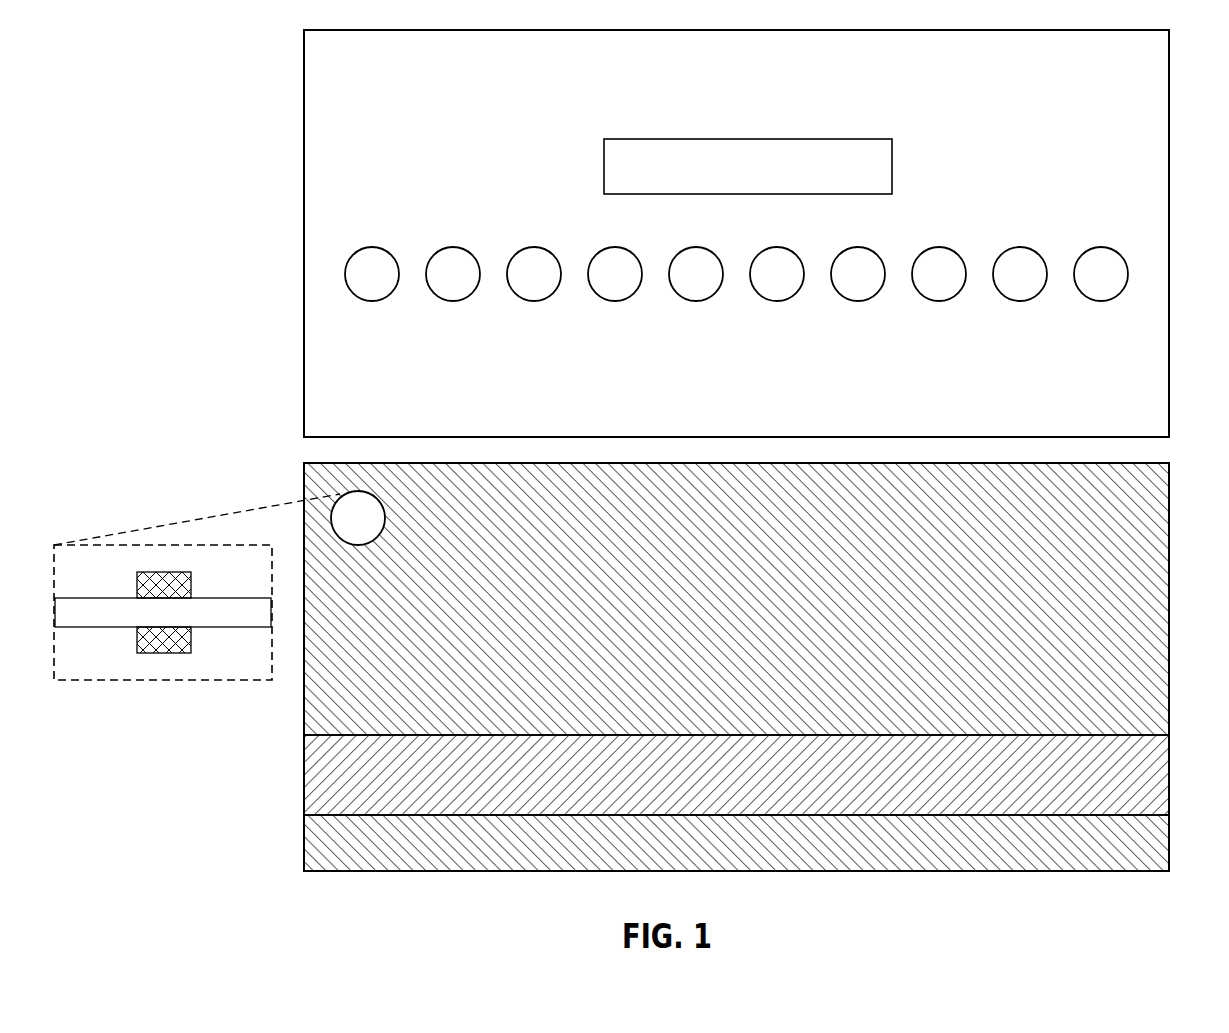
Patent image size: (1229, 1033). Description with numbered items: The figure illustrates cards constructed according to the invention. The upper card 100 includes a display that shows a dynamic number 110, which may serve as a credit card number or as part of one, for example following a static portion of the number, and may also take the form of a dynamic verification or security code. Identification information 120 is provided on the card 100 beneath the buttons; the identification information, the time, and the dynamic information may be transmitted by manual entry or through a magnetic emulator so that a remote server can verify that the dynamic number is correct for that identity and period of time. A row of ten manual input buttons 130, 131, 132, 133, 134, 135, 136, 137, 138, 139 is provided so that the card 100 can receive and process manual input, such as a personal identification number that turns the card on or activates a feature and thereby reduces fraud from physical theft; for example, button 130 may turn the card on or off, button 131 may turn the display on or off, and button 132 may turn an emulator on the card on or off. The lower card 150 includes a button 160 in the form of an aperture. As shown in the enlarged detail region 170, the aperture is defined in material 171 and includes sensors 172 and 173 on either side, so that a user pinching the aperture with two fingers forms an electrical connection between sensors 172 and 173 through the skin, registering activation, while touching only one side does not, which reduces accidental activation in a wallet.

The card 100 is at (304, 238).
The dynamic number 110 is at (630, 158).
The identification information 120 is at (497, 386).
The input button 130 is at (373, 247).
The input button 131 is at (454, 247).
The input button 132 is at (535, 247).
The input button 133 is at (616, 247).
The input button 134 is at (697, 247).
The input button 135 is at (778, 247).
The input button 136 is at (859, 247).
The input button 137 is at (940, 247).
The input button 138 is at (1021, 247).
The input button 139 is at (1102, 247).
The card 150 is at (304, 718).
The button 160 is at (386, 526).
The magnetic emulator 170 is at (197, 587).
The material 171 is at (255, 598).
The sensor 172 is at (138, 578).
The sensor 173 is at (145, 645).